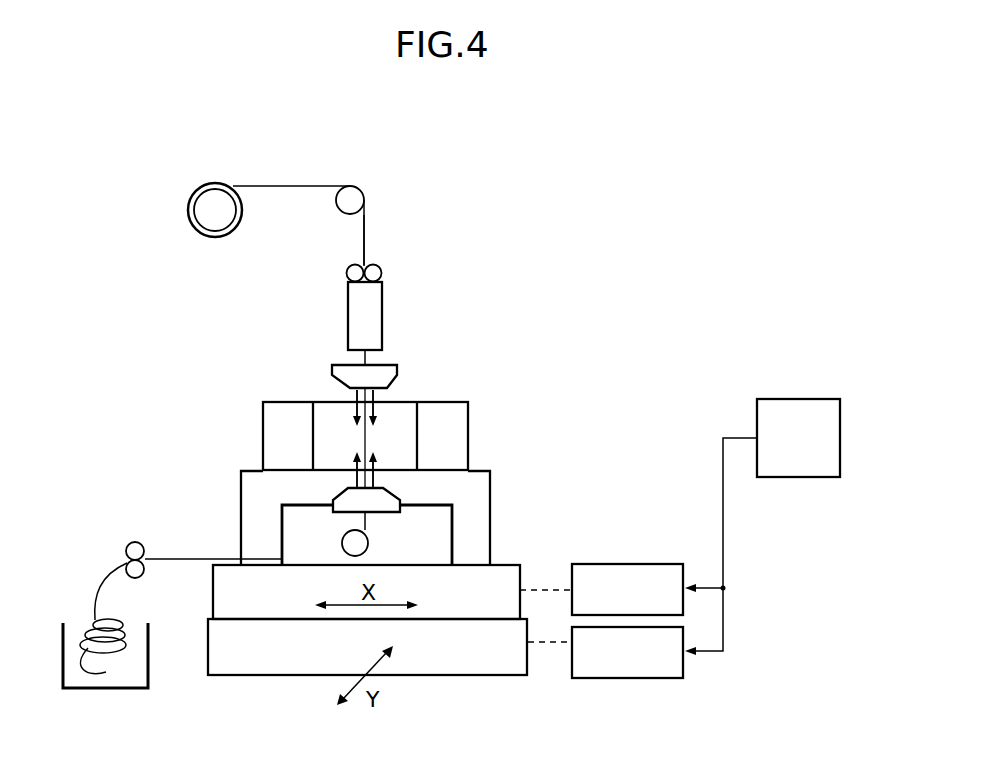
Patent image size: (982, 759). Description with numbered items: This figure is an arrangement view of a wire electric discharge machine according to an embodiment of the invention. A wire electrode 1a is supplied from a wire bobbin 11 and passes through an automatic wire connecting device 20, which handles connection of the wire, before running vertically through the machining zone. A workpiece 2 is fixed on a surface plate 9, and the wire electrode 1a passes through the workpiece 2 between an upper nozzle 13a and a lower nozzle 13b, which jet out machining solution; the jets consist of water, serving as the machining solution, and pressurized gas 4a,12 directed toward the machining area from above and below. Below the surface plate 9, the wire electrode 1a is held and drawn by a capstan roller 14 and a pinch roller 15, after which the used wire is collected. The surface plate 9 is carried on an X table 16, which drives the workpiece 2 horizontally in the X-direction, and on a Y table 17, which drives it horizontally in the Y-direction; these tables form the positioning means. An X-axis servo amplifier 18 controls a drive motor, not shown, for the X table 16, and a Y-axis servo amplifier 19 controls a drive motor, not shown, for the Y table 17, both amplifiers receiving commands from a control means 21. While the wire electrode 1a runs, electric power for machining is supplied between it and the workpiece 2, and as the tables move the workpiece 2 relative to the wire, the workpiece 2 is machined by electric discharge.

The wire bobbin 11 is at (225, 183).
The wire electrode 1a is at (363, 245).
The automatic wire connecting device 20 is at (378, 312).
The nozzle 13a is at (393, 370).
The water and pressurized gas 4a,12 is at (372, 395).
The workpiece 2 is at (460, 430).
The surface plate 9 is at (483, 483).
The nozzle 13b is at (333, 500).
The pinch roller 15 is at (135, 541).
The capstan roller 14 is at (145, 577).
The X table 16 is at (213, 596).
The Y table 17 is at (240, 677).
The X-axis servo amplifier 18 is at (627, 563).
The Y-axis servo amplifier 19 is at (626, 681).
The control means 21 is at (797, 480).